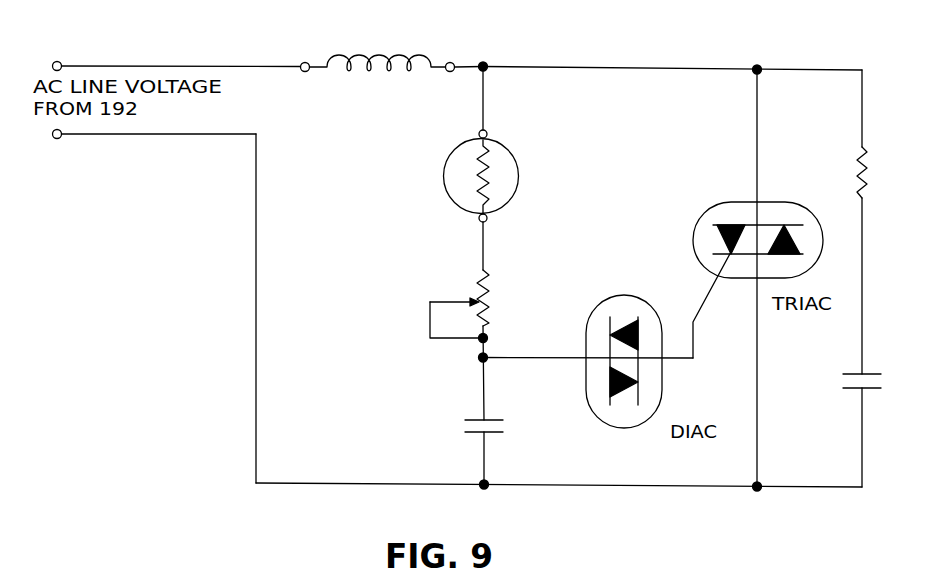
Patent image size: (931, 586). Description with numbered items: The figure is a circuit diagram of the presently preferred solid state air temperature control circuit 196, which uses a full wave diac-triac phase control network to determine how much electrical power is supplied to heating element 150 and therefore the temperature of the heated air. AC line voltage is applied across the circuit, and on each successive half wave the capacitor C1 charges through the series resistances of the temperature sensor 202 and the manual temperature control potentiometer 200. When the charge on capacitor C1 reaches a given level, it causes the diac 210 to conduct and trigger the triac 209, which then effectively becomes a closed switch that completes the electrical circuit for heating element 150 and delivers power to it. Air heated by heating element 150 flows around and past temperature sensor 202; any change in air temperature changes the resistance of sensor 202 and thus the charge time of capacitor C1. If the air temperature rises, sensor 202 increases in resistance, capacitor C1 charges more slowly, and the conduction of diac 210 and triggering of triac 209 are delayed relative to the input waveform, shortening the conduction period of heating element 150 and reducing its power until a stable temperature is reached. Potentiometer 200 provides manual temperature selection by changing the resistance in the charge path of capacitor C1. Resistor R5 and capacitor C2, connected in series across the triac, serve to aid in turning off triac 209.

The heating element 150 is at (370, 55).
The temperature sensor 202 is at (518, 163).
The manual temperature control potentiometer 200 is at (488, 272).
The triac 209 is at (728, 202).
The diac 210 is at (665, 377).
The solid state air temperature control circuit 196 is at (220, 325).
The resistor R5 is at (867, 172).
The capacitor C1 is at (492, 433).
The capacitor C2 is at (867, 390).